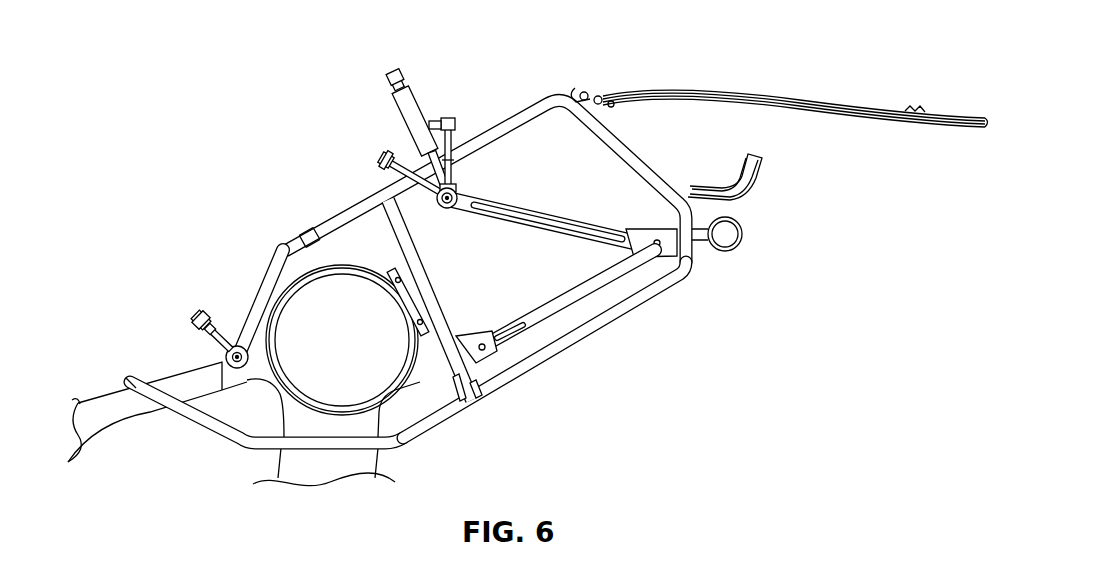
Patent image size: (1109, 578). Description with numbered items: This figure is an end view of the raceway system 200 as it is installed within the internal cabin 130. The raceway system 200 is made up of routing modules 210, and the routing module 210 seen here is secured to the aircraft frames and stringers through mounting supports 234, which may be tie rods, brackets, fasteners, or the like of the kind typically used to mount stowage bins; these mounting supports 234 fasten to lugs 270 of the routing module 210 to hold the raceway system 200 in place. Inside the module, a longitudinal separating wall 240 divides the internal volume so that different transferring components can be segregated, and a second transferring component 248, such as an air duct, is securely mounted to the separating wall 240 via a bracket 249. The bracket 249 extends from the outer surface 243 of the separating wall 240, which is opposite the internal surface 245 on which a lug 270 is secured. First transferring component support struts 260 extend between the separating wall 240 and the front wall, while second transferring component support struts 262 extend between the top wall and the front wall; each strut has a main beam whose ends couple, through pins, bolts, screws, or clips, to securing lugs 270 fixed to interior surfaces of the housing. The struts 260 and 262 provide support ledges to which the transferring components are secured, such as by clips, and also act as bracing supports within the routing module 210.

The internal cabin 130 is at (655, 385).
The raceway system 200 is at (349, 141).
The routing module 210 is at (555, 97).
The mounting supports 234 is at (418, 106).
The separating wall 240 is at (378, 257).
The outer surface 243 is at (375, 250).
The internal surface 245 is at (440, 308).
The second transferring component 248 is at (405, 381).
The bracket 249 is at (447, 378).
The first transferring component support strut 260 is at (604, 288).
The second transferring component support strut 262 is at (624, 230).
The securing lug 270 is at (455, 185).